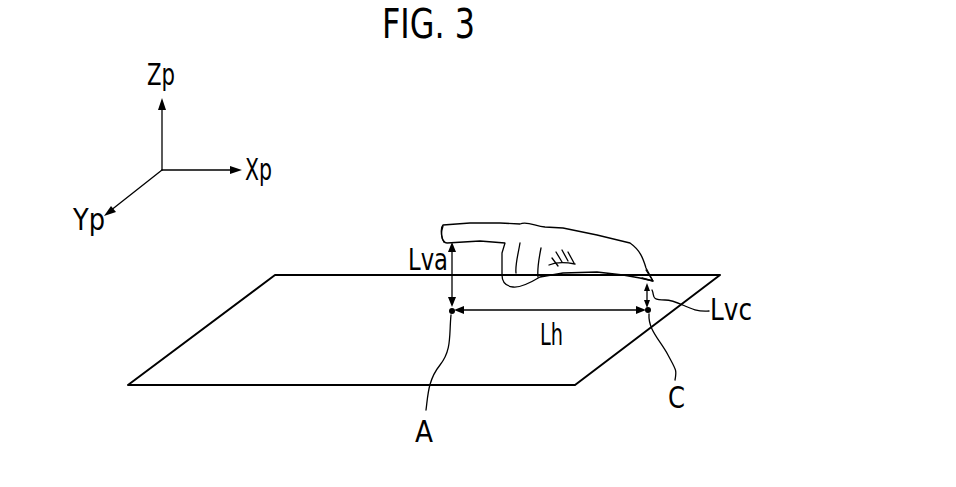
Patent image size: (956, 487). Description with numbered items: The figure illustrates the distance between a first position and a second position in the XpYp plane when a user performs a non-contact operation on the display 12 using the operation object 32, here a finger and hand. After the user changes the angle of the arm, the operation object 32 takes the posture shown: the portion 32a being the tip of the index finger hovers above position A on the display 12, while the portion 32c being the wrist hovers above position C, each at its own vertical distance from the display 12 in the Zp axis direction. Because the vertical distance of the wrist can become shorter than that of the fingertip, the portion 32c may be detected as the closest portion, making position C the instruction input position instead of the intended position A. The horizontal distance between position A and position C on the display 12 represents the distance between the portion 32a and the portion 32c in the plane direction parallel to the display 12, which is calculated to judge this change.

The display 12 is at (281, 366).
The operation object 32 is at (535, 211).
The portion being the tip of the index finger 32a is at (436, 242).
The portion being the wrist 32c is at (665, 285).